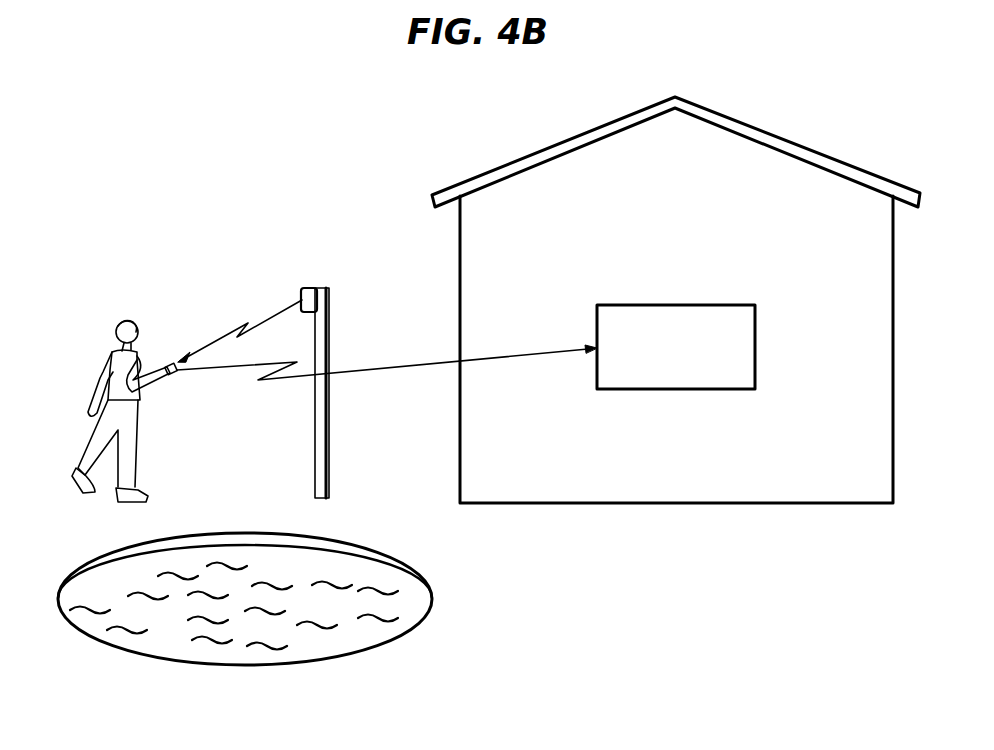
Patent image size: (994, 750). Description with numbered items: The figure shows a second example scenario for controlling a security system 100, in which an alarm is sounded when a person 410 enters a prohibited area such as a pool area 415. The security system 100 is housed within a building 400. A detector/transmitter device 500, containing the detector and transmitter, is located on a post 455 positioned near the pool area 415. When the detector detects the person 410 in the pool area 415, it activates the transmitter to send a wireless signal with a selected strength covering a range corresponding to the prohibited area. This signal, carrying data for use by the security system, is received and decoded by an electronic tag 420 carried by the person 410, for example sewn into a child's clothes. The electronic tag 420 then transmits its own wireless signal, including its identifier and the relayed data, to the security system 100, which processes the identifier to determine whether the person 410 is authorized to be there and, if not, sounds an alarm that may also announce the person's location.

The security system 100 is at (755, 340).
The building 400 is at (803, 150).
The person 410 is at (105, 372).
The pool area 415 is at (252, 665).
The electronic tag 420 is at (168, 364).
The post 455 is at (331, 310).
The detector/transmitter device 500 is at (305, 288).